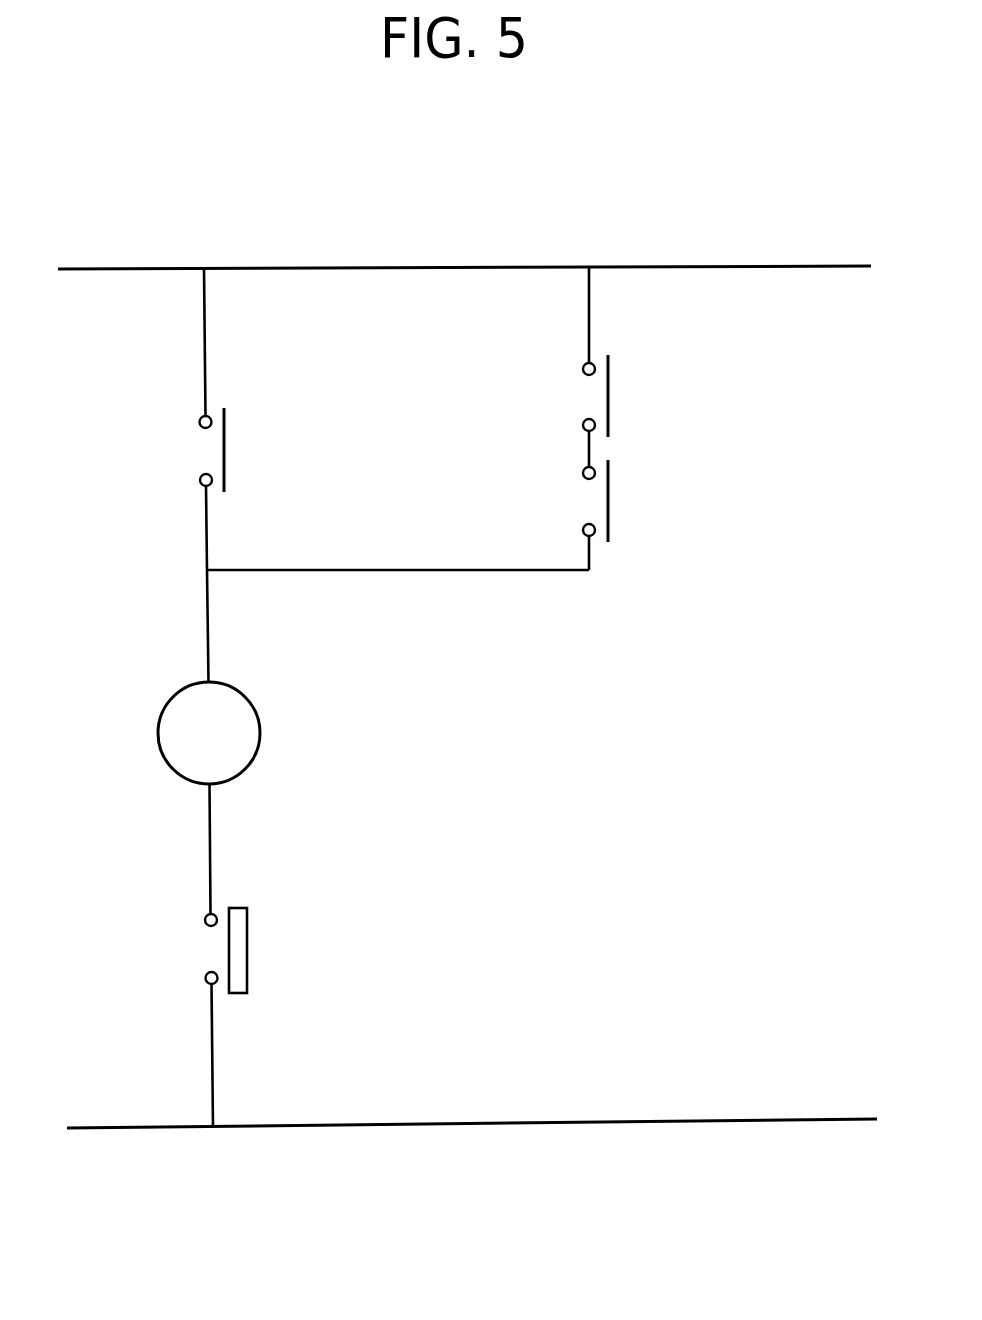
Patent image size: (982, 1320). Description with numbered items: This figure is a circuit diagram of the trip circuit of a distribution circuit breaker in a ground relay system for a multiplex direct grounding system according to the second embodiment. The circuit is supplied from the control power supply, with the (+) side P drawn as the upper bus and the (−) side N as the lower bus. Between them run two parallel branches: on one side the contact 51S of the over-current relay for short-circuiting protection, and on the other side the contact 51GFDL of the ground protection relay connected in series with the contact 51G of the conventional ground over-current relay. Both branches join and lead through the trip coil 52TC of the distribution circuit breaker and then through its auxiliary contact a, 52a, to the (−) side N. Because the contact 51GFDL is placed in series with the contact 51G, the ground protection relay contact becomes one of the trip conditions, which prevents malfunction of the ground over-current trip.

The (+) side of control power supply P is at (499, 266).
The (−) side of control power supply N is at (495, 1122).
The contact of over-current relay 51S is at (235, 450).
The contact of ground protection relay 51GFDL is at (622, 398).
The contact of ground over-current relay 51G is at (622, 501).
The trip coil 52TC is at (260, 732).
The auxiliary contact a 52a is at (263, 950).